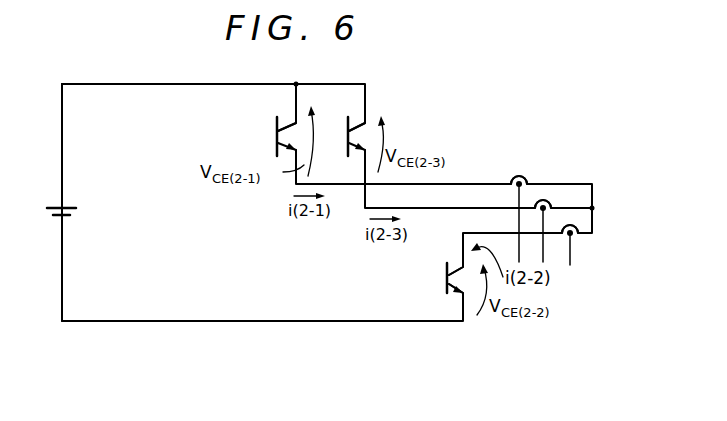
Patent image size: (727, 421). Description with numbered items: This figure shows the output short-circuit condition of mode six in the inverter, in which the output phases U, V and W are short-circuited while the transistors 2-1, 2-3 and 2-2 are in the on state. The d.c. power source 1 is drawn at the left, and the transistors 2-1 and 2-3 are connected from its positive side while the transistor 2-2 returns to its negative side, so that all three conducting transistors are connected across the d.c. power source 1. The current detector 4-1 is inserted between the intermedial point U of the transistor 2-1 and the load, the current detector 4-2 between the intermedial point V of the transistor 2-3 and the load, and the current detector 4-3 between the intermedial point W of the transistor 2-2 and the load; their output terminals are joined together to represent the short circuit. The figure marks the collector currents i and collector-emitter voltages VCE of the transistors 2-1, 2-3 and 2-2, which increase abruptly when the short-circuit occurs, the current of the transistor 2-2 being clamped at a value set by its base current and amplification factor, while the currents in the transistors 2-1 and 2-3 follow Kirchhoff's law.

The d.c. power source 1 is at (79, 209).
The transistor 2-1 is at (273, 129).
The transistor 2-2 is at (441, 283).
The transistor 2-3 is at (357, 120).
The current detector 4-1 is at (519, 175).
The current detector 4-2 is at (548, 200).
The current detector 4-3 is at (576, 240).